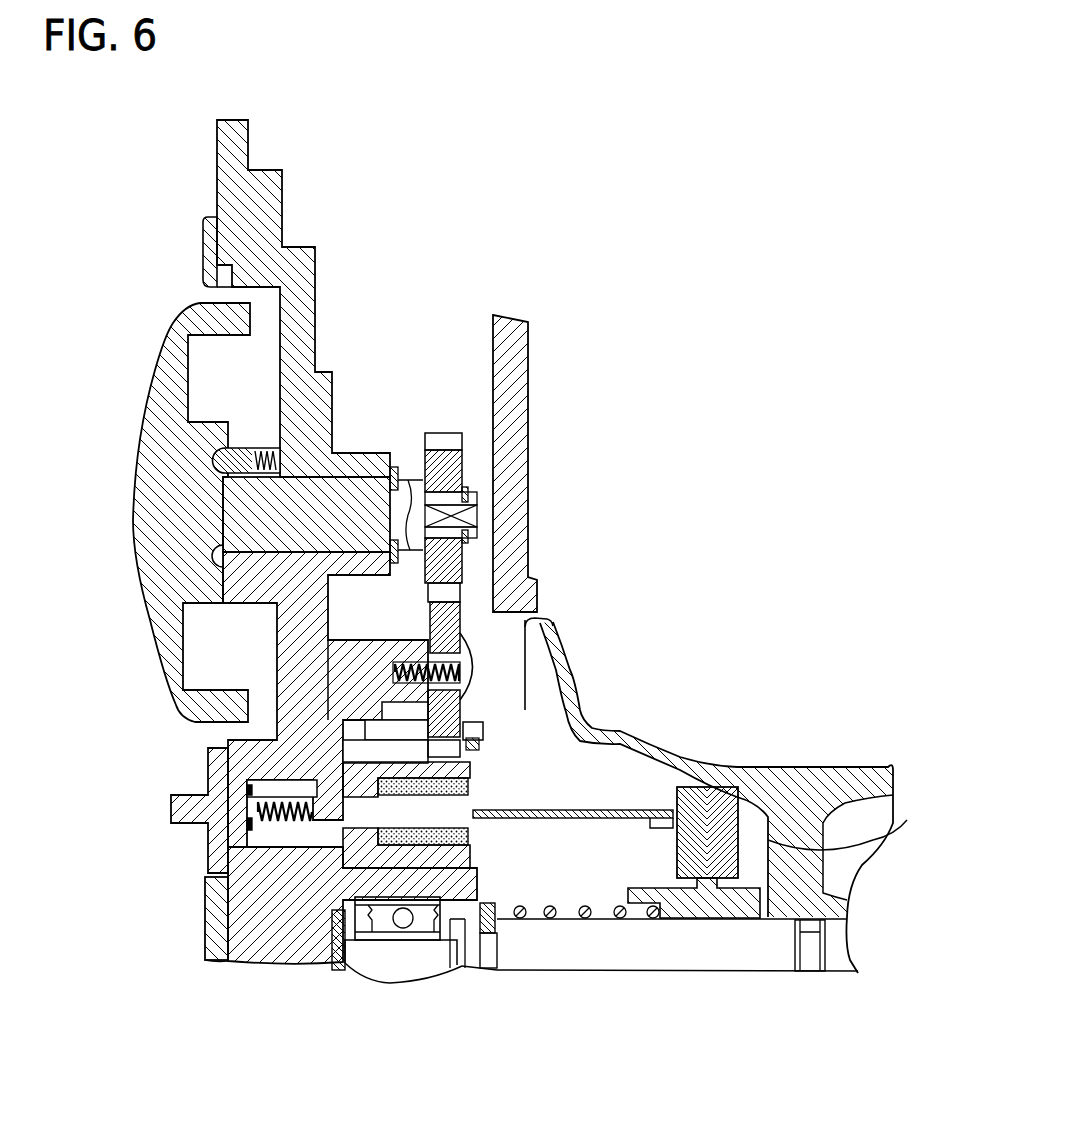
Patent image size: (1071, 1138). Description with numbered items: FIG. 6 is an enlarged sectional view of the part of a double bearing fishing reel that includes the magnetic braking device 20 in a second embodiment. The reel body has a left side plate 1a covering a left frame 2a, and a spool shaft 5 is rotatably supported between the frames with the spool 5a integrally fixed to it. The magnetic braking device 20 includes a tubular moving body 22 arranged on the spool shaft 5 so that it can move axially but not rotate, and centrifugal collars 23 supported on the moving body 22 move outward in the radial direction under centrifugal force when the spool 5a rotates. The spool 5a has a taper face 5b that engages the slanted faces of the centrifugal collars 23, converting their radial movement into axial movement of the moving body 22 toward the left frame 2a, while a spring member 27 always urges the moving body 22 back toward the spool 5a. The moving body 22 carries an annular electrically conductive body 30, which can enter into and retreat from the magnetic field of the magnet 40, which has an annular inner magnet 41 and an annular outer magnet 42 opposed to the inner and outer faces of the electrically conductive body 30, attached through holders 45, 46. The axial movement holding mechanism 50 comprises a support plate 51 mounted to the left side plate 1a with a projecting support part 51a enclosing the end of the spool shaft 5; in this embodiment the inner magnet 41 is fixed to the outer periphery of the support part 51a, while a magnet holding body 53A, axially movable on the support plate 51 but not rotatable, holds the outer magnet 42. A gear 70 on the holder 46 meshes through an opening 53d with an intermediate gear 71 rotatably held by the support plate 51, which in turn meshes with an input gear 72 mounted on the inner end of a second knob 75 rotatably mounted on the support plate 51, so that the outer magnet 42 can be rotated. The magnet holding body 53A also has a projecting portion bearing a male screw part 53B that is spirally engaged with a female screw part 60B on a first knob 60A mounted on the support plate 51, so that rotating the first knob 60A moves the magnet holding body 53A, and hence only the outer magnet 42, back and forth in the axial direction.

The left side plate 1a is at (240, 135).
The left frame 2a is at (512, 330).
The spool shaft 5 is at (757, 960).
The spool 5a is at (810, 780).
The taper face 5b is at (650, 808).
The magnetic braking device 20 is at (660, 627).
The moving body 22 is at (700, 898).
The centrifugal collar 23 is at (857, 829).
The spring member 27 is at (580, 917).
The electrically conductive body 30 is at (733, 843).
The magnet 40 is at (470, 803).
The inner magnet 41 is at (465, 837).
The outer magnet 42 is at (470, 787).
The holder 45 is at (443, 857).
The holder 46 is at (480, 735).
The axial movement holding mechanism 50 is at (155, 914).
The support plate 51 is at (295, 917).
The support part 51a is at (402, 890).
The magnet holding body 53A is at (327, 750).
The male screw part 53B is at (277, 822).
The opening 53d is at (395, 728).
The first knob 60A is at (172, 800).
The female screw part 60B is at (250, 825).
The gear 70 is at (417, 762).
The intermediate gear 71 is at (455, 612).
The input gear 72 is at (440, 433).
The second knob 75 is at (145, 507).